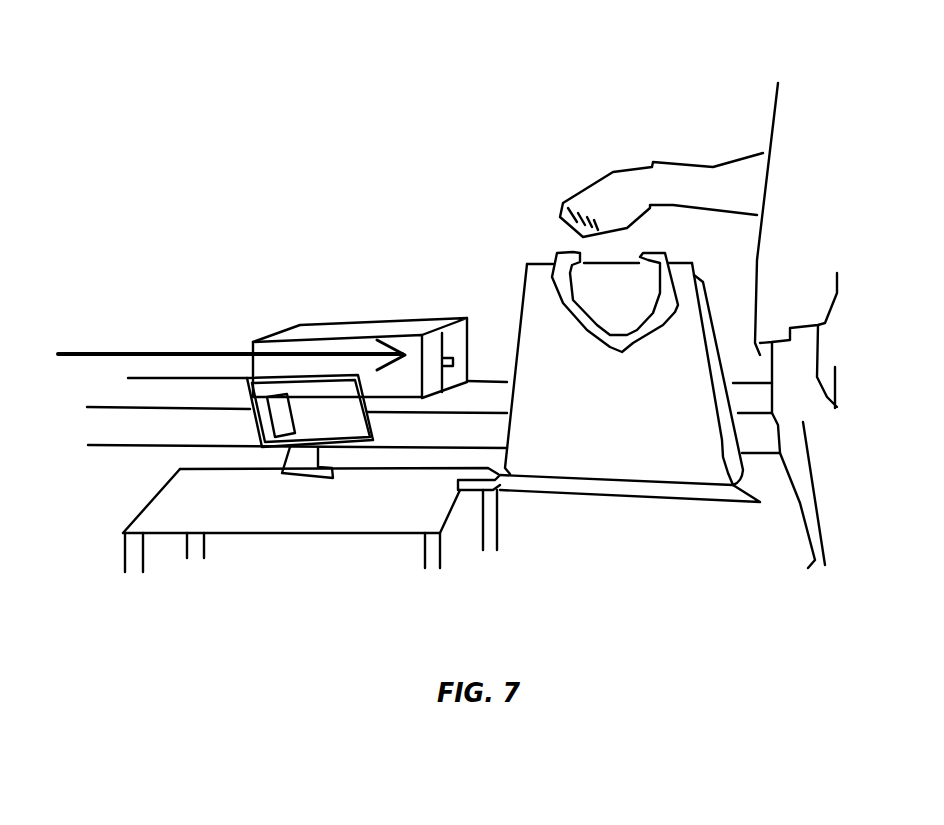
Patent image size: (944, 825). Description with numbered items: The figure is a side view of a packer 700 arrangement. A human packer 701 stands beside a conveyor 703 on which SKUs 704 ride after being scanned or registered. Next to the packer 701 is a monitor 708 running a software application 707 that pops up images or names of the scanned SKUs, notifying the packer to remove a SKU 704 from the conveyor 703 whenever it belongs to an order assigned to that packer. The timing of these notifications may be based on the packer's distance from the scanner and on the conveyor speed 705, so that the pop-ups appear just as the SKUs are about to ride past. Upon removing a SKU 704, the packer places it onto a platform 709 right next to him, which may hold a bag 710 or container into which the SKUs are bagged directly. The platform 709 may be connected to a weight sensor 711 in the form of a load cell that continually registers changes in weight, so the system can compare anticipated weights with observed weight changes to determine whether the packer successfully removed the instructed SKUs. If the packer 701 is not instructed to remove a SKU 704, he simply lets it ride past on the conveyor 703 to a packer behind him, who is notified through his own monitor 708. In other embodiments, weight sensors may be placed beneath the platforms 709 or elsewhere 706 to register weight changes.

The packer 700 is at (273, 122).
The packer 701 is at (787, 135).
The conveyor 703 is at (492, 393).
The SKU 704 is at (352, 333).
The conveyor speed 705 is at (120, 352).
The weight sensor location 706 is at (195, 508).
The software application 707 is at (280, 422).
The monitor 708 is at (330, 405).
The platform 709 is at (533, 485).
The bag 710 is at (658, 443).
The weight sensor 711 is at (475, 482).